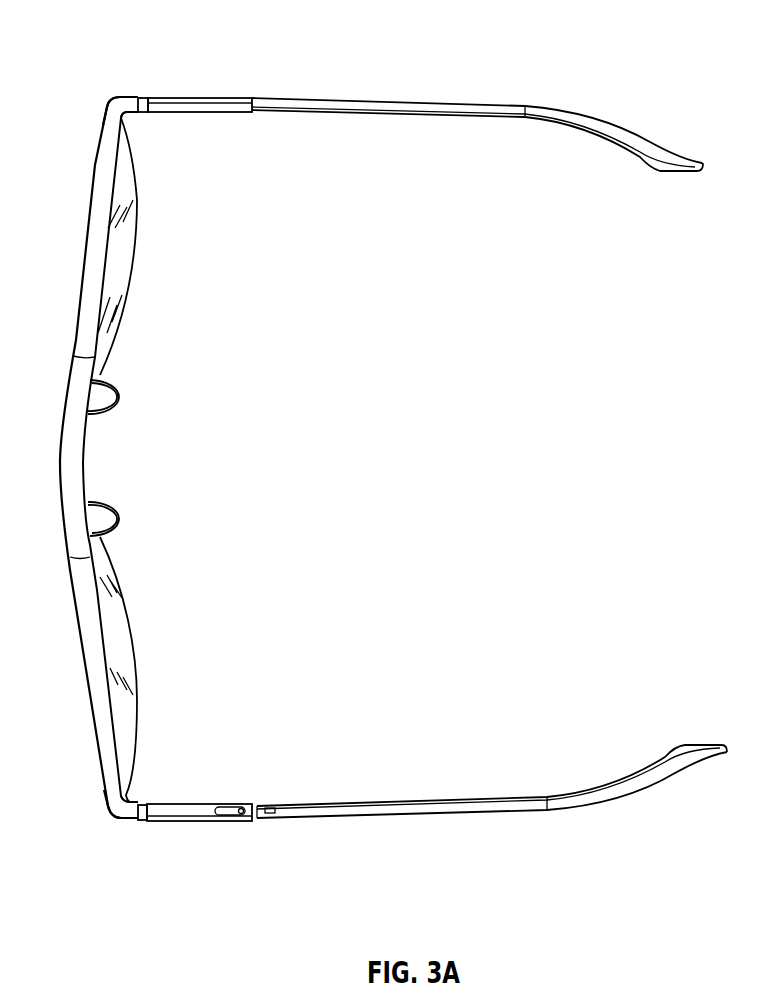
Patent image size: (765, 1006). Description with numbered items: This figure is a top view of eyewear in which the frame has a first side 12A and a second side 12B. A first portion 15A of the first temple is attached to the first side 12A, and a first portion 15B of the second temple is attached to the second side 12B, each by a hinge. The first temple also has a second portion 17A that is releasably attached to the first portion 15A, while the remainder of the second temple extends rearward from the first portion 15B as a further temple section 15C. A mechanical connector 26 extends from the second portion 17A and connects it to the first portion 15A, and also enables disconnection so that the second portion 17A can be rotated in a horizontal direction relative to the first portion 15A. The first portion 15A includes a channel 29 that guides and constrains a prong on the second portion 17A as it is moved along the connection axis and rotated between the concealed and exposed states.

The first side 12A is at (120, 818).
The second side 12B is at (118, 97).
The first portion 15A is at (252, 825).
The first portion 15B is at (252, 92).
The temple distal section 15C is at (703, 158).
The second portion 17A is at (727, 753).
The mechanical connector 26 is at (270, 808).
The channel 29 is at (233, 807).